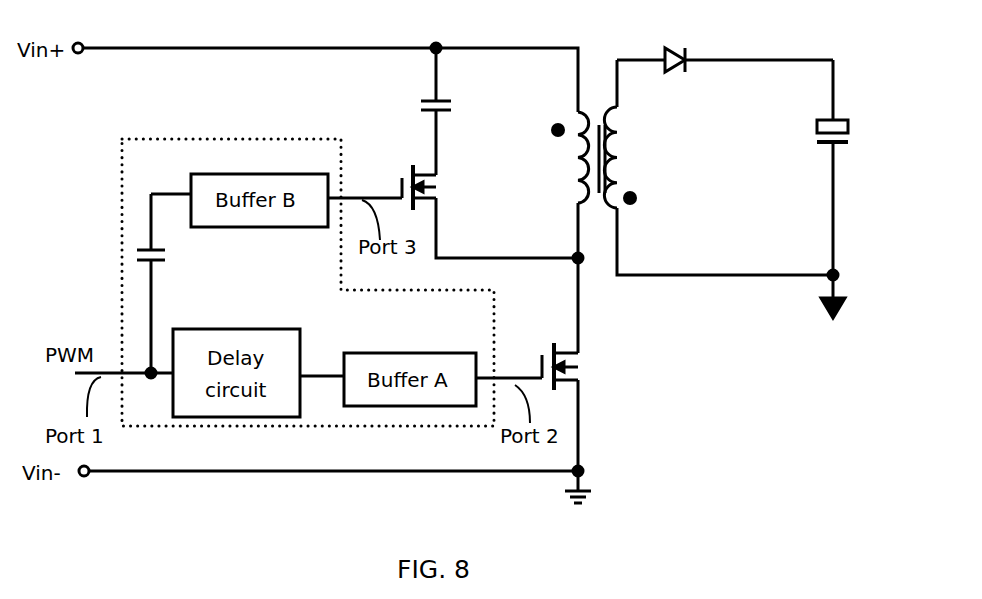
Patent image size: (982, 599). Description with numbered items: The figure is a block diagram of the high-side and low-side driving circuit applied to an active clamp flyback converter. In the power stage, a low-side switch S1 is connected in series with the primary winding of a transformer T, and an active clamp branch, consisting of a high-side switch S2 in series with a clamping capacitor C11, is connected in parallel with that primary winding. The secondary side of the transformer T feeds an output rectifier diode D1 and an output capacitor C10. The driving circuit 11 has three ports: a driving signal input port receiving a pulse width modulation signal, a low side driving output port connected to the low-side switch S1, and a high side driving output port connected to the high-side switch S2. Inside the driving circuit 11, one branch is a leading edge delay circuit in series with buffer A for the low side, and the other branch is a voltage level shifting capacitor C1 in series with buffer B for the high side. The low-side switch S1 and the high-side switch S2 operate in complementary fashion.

The driving circuit 11 is at (130, 158).
The voltage level shifting capacitor C1 is at (168, 266).
The clamping capacitor C11 is at (413, 111).
The low-side switch S1 is at (541, 366).
The high-side switch S2 is at (399, 187).
The transformer T is at (587, 145).
The diode D1 is at (682, 42).
The output capacitor C10 is at (801, 131).